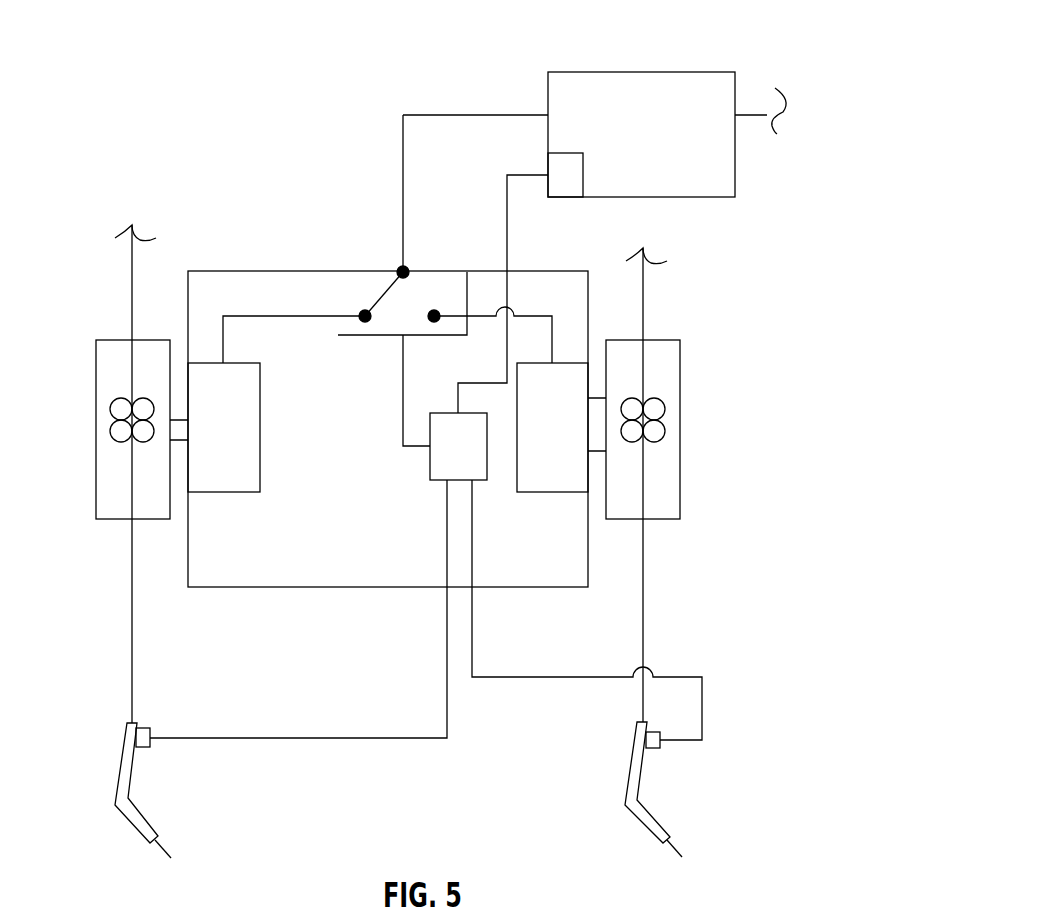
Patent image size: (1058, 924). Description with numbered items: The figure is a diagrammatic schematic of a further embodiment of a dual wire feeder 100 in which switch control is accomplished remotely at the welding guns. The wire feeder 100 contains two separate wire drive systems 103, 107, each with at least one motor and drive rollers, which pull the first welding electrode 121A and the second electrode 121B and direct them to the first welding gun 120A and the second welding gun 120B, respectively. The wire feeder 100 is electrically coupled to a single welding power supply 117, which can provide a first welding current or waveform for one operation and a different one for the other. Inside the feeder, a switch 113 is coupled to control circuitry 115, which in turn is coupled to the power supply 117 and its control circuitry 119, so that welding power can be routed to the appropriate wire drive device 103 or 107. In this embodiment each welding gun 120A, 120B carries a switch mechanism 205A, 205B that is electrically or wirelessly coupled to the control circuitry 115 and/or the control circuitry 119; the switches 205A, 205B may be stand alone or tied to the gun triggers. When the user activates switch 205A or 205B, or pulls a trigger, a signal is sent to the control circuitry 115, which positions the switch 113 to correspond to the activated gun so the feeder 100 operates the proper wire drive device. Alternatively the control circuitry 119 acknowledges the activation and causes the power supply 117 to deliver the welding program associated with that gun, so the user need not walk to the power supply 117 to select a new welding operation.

The wire feeder 100 is at (226, 160).
The first wire drive system 103 is at (96, 503).
The second wire drive system 107 is at (680, 463).
The switch 113 is at (363, 336).
The control circuitry 115 is at (430, 468).
The welding power supply 117 is at (641, 72).
The control circuitry 119 is at (560, 197).
The first welding gun 120A is at (128, 782).
The second welding gun 120B is at (630, 770).
The first welding electrode 121A is at (132, 637).
The second welding electrode 121B is at (643, 613).
The switch mechanism 205A is at (148, 730).
The switch mechanism 205B is at (658, 750).